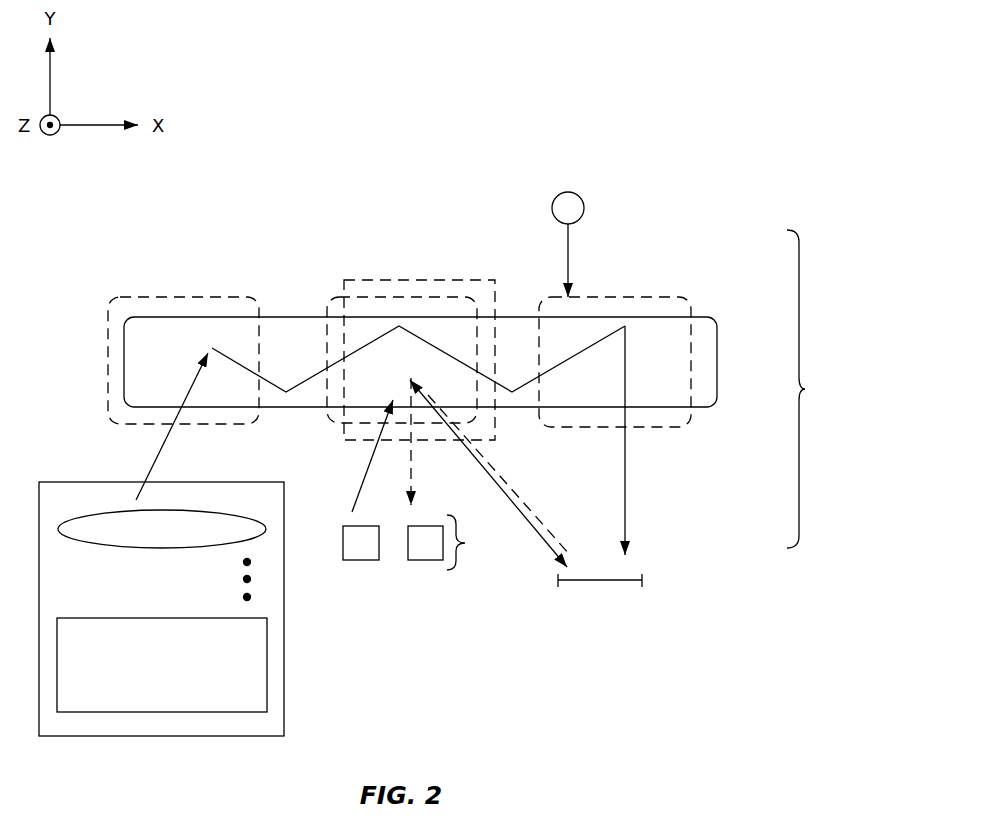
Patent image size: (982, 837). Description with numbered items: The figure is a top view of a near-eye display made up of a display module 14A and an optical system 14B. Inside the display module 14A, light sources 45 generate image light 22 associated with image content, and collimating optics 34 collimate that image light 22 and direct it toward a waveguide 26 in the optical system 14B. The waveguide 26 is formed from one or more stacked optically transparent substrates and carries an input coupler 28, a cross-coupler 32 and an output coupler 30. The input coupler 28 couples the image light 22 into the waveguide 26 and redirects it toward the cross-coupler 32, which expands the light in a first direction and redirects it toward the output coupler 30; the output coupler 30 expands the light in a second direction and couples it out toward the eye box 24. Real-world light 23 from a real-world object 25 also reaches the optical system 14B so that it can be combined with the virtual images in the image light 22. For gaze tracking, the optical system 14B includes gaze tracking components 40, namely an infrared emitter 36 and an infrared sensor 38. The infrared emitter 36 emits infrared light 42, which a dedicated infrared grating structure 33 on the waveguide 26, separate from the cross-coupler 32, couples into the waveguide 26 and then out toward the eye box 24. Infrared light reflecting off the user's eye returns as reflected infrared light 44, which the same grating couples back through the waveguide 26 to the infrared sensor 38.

The display module 14A is at (284, 712).
The optical system 14B is at (819, 389).
The image light 22 is at (165, 447).
The ambient light from object 23 is at (570, 252).
The eye box 24 is at (598, 583).
The real-world object 25 is at (585, 205).
The waveguide 26 is at (718, 362).
The input coupler 28 is at (185, 297).
The output coupler 30 is at (665, 297).
The cross-coupler 32 is at (378, 297).
The infrared grating structure 33 is at (447, 280).
The collimating optics 34 is at (266, 527).
The infrared emitter 36 is at (357, 562).
The infrared sensor 38 is at (425, 562).
The gaze tracking components 40 is at (470, 542).
The infrared light 42 is at (372, 457).
The reflected infrared light 44 is at (413, 480).
The light sources 45 is at (267, 668).